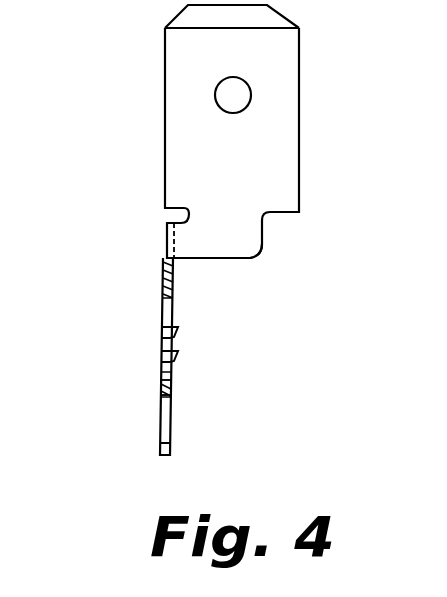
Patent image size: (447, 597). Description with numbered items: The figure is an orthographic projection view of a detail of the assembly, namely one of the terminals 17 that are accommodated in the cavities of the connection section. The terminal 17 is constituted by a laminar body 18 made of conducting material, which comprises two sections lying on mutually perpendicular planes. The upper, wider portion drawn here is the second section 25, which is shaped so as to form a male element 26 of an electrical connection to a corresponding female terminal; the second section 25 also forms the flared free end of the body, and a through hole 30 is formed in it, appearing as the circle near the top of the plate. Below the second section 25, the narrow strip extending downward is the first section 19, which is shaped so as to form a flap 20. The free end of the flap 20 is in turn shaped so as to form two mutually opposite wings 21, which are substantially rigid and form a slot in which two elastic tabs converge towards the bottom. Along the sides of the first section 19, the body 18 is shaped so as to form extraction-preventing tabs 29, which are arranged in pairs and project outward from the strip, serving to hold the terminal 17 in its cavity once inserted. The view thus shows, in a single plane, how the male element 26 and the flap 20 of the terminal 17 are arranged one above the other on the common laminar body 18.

The terminal 17 is at (262, 253).
The laminar body 18 is at (163, 272).
The first section 19 is at (171, 390).
The flap 20 is at (162, 384).
The wings 21 is at (160, 425).
The second section 25 is at (165, 86).
The male element 26 is at (302, 57).
The extraction-preventing tabs 29 is at (179, 330).
The through hole 30 is at (237, 97).